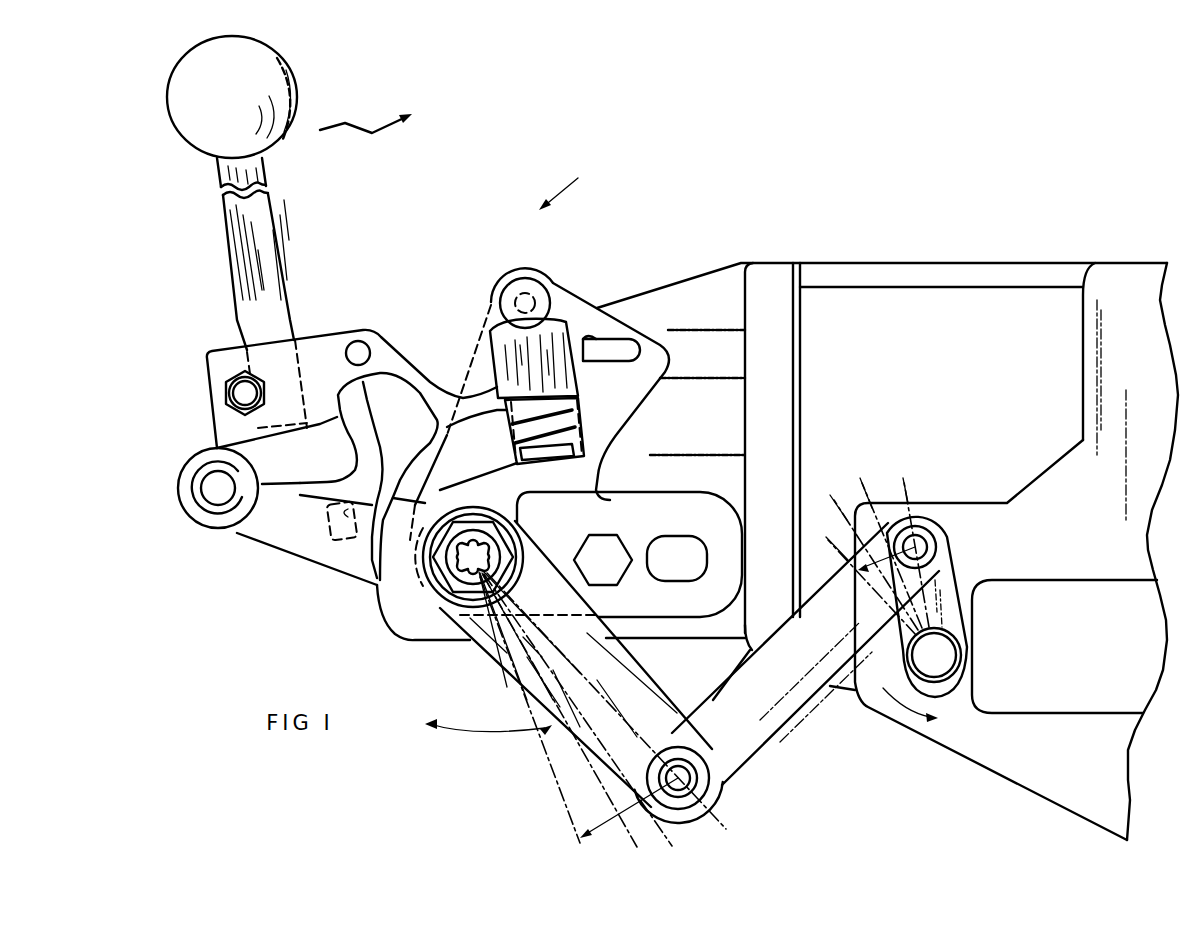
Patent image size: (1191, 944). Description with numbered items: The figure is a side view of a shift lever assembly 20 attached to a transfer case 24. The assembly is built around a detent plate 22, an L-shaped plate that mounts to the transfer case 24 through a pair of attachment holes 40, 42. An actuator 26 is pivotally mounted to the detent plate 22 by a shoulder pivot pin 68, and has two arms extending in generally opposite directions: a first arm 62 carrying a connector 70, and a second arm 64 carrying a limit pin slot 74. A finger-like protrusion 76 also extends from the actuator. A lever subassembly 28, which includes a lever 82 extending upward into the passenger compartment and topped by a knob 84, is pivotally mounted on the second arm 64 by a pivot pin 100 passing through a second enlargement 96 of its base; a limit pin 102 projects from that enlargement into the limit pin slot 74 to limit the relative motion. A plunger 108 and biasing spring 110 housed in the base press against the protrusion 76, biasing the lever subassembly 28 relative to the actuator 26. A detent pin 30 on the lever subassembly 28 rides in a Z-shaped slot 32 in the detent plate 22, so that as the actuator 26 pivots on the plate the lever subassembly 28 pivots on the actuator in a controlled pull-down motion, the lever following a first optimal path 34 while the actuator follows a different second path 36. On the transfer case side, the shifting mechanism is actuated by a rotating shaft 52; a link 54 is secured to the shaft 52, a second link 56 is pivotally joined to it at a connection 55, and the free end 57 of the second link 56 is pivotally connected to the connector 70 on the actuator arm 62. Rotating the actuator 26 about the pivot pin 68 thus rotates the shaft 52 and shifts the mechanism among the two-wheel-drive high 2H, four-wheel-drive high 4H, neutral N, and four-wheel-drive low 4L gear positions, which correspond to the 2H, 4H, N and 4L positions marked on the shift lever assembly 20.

The shift lever assembly 20 is at (572, 179).
The detent plate 22 is at (562, 273).
The transfer case 24 is at (901, 259).
The actuator 26 is at (545, 730).
The lever subassembly 28 is at (198, 387).
The detent pin 30 is at (510, 292).
The Z-shaped slot 32 is at (640, 313).
The first optimal path 34 is at (364, 131).
The second path 36 is at (553, 766).
The attachment hole 40 is at (606, 549).
The attachment hole 42 is at (680, 540).
The shaft 52 is at (946, 653).
The link 54 is at (957, 575).
The connection 55 is at (927, 541).
The second link 56 is at (785, 730).
The free end 57 is at (709, 780).
The arm 62 is at (572, 668).
The second arm 64 is at (357, 583).
The shoulder pivot pin 68 is at (462, 580).
The connector 70 is at (676, 772).
The limit pin slot 74 is at (335, 540).
The finger-like protrusion 76 is at (568, 467).
The lever 82 is at (230, 255).
The knob 84 is at (183, 147).
The second enlargement 96 is at (243, 540).
The pivot pin 100 is at (218, 497).
The limit pin 102 is at (325, 520).
The plunger 108 is at (585, 432).
The biasing spring 110 is at (557, 427).
The four-wheel-drive low-vehicle-speed gear position 4L is at (699, 695).
The neutral gear position N is at (731, 674).
The four-wheel-drive high-vehicle-speed gear position 4H is at (771, 665).
The two-wheel-drive high-vehicle-speed gear position 2H is at (726, 829).